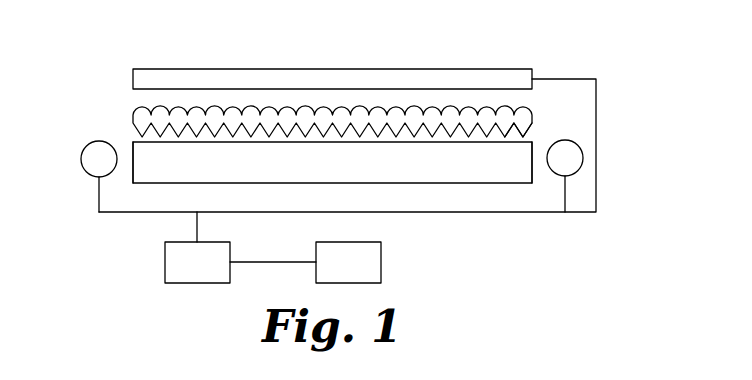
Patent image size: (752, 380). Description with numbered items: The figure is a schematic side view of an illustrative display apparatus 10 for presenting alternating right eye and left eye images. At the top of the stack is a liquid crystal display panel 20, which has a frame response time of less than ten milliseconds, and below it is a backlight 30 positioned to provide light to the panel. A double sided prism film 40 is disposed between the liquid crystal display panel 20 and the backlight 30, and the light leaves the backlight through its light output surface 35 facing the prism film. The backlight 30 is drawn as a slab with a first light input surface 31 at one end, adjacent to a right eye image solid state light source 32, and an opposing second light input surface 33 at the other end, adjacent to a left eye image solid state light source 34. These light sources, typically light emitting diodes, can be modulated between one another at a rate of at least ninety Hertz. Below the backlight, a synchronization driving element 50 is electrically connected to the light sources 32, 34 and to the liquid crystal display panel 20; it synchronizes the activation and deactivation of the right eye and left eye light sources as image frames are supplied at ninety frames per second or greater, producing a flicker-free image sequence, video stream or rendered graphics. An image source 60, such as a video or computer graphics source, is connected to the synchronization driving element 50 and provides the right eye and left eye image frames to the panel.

The display apparatus 10 is at (453, 54).
The liquid crystal display panel 20 is at (143, 72).
The double sided prism film 40 is at (141, 112).
The backlight 30 is at (128, 138).
The light output surface 35 is at (522, 139).
The second light input surface 33 is at (133, 178).
The first light input surface 31 is at (532, 170).
The left eye image solid state light source 34 is at (95, 160).
The right eye image solid state light source 32 is at (572, 156).
The synchronization driving element 50 is at (172, 263).
The image source 60 is at (372, 264).